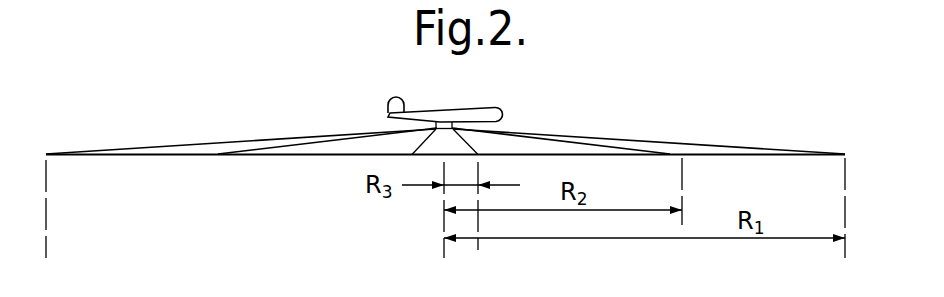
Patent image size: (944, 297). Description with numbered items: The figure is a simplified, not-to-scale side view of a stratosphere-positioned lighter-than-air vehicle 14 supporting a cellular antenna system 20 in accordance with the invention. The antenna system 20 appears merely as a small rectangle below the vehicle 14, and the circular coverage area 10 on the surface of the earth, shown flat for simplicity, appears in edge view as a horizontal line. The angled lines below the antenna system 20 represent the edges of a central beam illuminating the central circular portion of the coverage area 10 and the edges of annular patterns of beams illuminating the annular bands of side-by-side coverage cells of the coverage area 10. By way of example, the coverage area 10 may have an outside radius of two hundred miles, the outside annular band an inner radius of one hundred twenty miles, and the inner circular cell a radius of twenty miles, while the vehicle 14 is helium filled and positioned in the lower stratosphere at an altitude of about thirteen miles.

The circular coverage area 10 is at (190, 163).
The lighter-than-air vehicle 14 is at (492, 106).
The cellular antenna system 20 is at (374, 121).